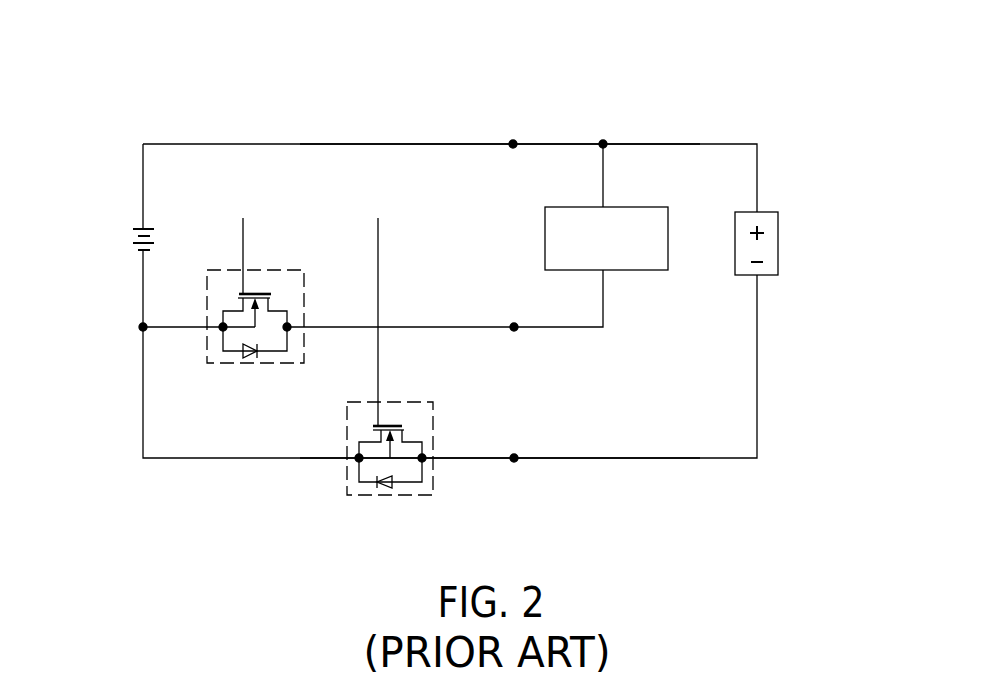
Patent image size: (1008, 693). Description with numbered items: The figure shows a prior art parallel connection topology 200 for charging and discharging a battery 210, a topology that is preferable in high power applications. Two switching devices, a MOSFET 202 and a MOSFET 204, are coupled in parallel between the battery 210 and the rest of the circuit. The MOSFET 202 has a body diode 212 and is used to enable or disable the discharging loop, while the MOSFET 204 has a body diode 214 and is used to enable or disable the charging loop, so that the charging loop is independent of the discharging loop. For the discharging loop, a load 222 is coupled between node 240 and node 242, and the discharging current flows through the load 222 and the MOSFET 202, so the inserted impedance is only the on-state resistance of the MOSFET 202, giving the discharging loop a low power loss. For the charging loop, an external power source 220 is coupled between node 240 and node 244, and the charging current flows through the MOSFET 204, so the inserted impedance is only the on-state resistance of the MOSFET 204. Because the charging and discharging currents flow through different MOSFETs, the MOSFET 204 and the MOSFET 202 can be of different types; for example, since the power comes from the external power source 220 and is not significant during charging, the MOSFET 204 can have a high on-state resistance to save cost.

The parallel connection topology 200 is at (805, 124).
The MOSFET 202 is at (247, 268).
The MOSFET 204 is at (397, 402).
The battery 210 is at (143, 252).
The body diode 212 is at (252, 356).
The body diode 214 is at (385, 490).
The external power source 220 is at (767, 212).
The load 222 is at (605, 207).
The node 240 is at (513, 144).
The node 242 is at (514, 326).
The node 244 is at (514, 458).